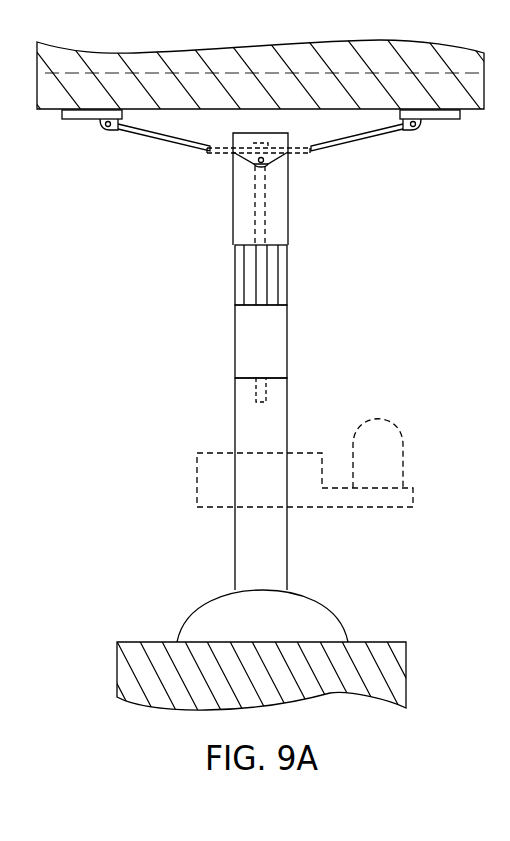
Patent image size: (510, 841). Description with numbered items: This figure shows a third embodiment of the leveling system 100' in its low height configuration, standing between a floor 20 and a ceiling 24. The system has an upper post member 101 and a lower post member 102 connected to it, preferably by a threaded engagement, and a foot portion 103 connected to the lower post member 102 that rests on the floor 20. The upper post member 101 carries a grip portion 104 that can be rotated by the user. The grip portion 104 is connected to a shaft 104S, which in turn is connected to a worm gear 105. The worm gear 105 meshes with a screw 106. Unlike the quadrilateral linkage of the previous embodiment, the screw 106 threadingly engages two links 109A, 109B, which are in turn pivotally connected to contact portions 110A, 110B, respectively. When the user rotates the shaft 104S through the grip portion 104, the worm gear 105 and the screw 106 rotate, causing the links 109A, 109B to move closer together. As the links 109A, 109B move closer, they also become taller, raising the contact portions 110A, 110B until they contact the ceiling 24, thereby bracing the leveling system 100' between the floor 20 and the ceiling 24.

The ceiling 24 is at (262, 53).
The contact portion 110A is at (87, 113).
The contact portion 110B is at (435, 113).
The link 109A is at (155, 133).
The link 109B is at (375, 133).
The worm gear 105 is at (245, 135).
The screw 106 is at (224, 154).
The shaft 104S is at (253, 217).
The grip portion 104 is at (282, 275).
The upper post member 101 is at (282, 345).
The lower post member 102 is at (282, 413).
The leveling system 100' is at (183, 426).
The foot portion 103 is at (318, 615).
The floor 20 is at (152, 650).